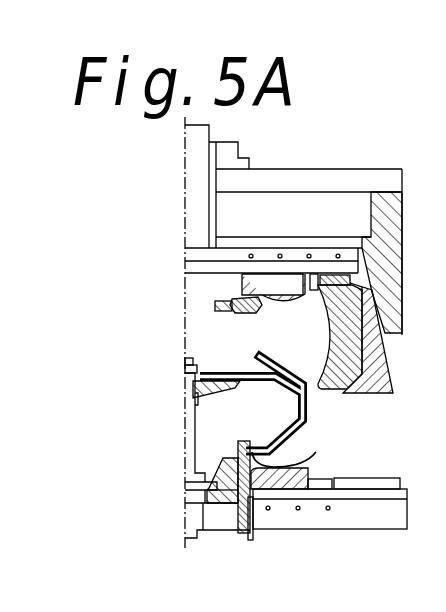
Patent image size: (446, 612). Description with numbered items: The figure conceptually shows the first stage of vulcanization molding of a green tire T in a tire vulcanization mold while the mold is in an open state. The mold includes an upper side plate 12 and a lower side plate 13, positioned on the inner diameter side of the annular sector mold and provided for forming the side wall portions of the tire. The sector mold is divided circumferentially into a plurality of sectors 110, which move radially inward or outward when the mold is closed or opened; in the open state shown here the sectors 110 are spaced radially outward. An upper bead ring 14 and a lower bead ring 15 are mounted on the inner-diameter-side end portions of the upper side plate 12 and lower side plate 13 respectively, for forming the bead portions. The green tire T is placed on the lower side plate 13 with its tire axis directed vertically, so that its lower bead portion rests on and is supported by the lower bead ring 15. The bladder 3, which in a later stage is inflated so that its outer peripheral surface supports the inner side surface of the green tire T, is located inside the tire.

The bladder 3 is at (276, 386).
The upper side plate 12 is at (283, 300).
The lower side plate 13 is at (282, 490).
The upper bead ring 14 is at (216, 306).
The lower bead ring 15 is at (240, 444).
The sector 110 is at (330, 397).
The green tire T is at (307, 426).